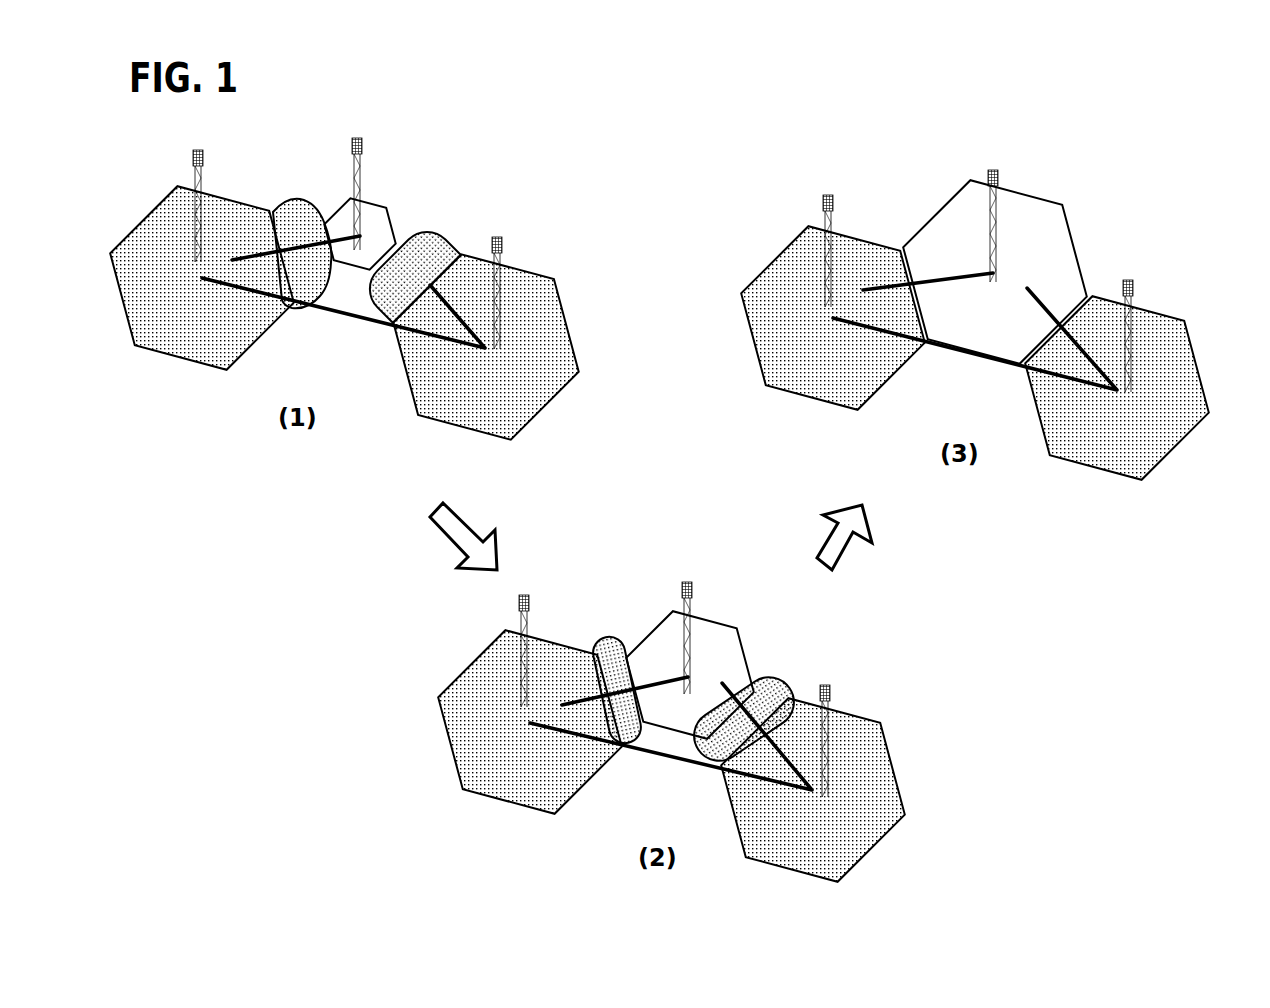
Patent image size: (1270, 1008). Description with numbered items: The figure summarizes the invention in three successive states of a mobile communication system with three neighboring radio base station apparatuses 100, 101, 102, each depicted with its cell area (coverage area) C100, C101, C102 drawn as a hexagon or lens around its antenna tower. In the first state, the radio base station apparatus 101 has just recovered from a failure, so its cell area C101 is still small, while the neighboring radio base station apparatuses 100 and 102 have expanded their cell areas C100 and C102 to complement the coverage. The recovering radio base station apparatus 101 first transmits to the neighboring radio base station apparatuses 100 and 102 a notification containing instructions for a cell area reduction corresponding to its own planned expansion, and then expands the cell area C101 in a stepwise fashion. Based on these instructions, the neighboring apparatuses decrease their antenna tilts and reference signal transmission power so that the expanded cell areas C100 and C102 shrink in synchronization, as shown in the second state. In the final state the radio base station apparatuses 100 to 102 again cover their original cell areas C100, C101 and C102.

The radio base station apparatus 100 is at (521, 468).
The radio base station apparatus 101 is at (397, 220).
The radio base station apparatus 102 is at (802, 550).
The cell area C100 is at (307, 294).
The cell area C101 is at (338, 212).
The cell area C102 is at (445, 248).